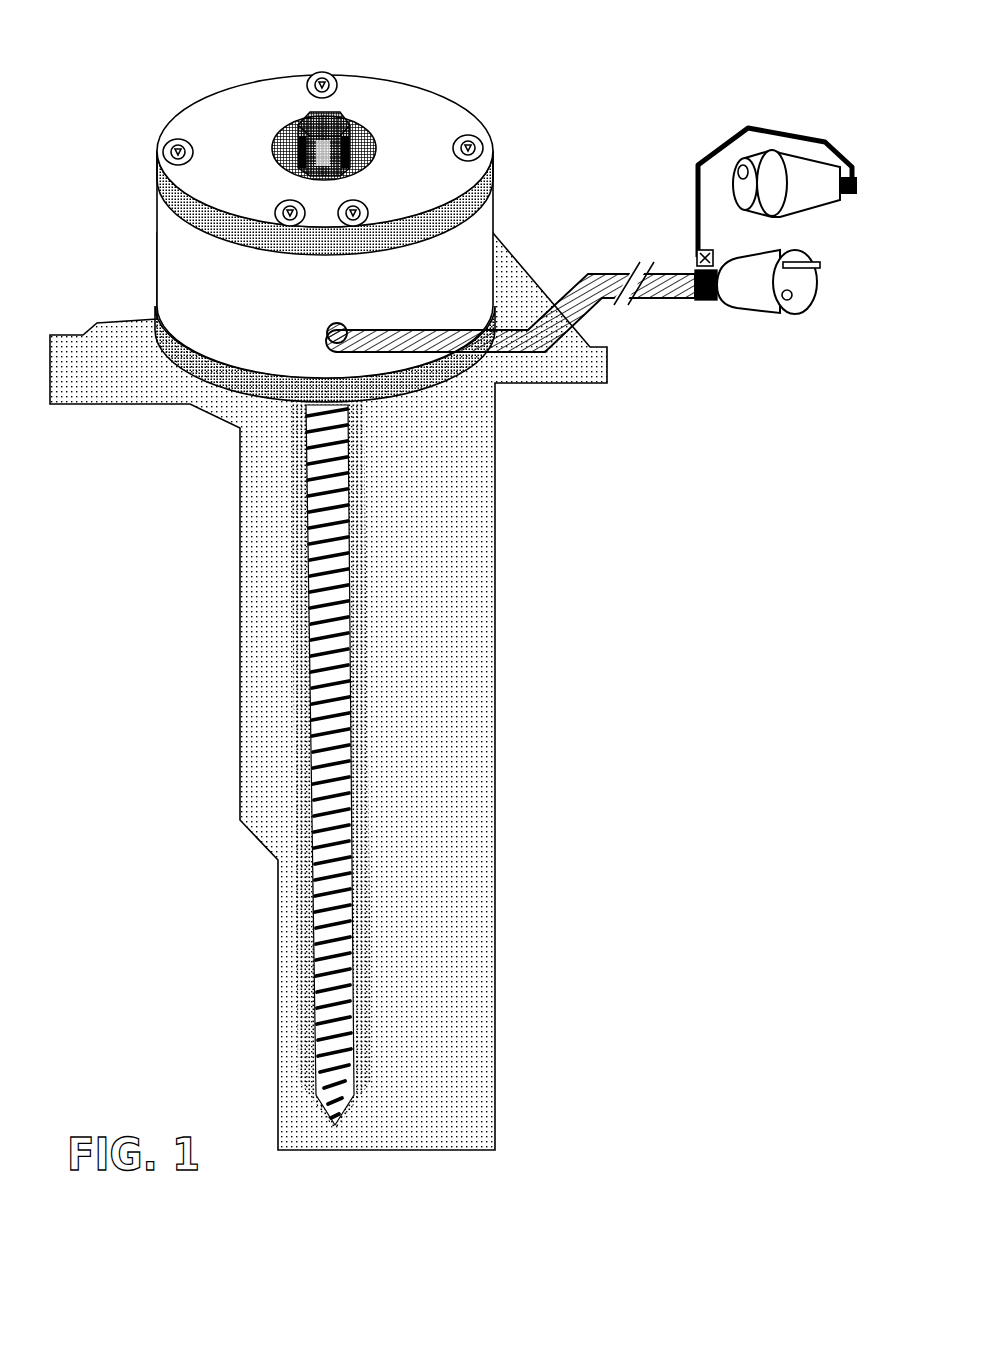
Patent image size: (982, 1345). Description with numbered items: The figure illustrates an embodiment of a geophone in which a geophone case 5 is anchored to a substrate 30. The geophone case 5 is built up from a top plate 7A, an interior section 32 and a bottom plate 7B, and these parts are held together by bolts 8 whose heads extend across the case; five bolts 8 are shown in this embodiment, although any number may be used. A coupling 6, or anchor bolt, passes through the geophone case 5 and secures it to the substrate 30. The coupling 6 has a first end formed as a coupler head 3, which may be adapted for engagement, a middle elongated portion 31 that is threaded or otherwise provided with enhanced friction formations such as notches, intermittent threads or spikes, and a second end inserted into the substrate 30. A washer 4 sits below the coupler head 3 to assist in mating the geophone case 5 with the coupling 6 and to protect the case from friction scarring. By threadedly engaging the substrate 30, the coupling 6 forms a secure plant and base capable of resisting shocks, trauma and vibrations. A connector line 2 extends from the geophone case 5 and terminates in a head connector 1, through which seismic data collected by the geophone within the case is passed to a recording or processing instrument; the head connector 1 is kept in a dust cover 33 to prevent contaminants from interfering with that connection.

The head connector 1 is at (777, 220).
The connector line 2 is at (667, 300).
The coupler head 3 is at (322, 128).
The washer 4 is at (285, 140).
The geophone case 5 is at (318, 238).
The coupling 6 is at (315, 577).
The top plate 7A is at (437, 107).
The bottom plate 7B is at (203, 375).
The bolt 8 is at (327, 78).
The substrate 30 is at (471, 554).
The elongated portion 31 is at (357, 672).
The interior section 32 is at (478, 222).
The dust cover 33 is at (767, 318).